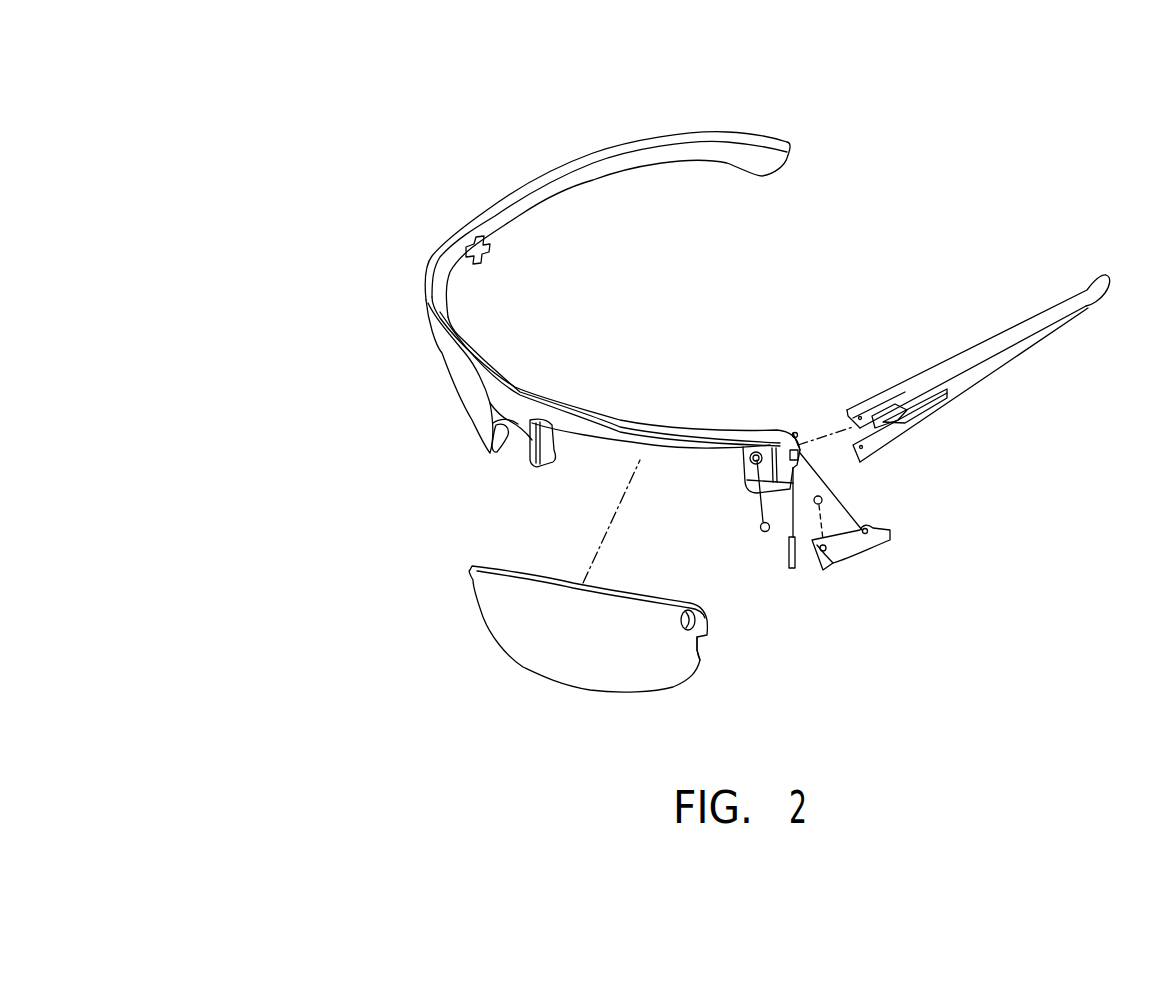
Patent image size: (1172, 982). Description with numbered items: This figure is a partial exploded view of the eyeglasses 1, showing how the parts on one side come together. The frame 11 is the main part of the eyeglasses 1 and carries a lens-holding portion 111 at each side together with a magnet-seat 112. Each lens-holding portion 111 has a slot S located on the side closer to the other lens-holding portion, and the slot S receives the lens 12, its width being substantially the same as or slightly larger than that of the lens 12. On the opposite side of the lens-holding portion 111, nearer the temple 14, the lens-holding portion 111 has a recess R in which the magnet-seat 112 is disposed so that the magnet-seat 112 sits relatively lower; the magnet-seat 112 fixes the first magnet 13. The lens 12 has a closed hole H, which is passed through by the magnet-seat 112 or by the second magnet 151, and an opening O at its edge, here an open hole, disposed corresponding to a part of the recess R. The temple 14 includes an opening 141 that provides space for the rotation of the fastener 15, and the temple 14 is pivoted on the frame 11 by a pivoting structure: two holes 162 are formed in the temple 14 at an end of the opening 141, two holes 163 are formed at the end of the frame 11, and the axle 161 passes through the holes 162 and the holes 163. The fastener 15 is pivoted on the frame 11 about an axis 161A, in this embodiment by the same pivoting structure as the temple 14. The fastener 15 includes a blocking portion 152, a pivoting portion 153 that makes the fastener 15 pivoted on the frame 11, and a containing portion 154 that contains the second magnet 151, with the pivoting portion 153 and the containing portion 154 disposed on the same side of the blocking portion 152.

The eyeglasses 1 is at (265, 108).
The frame 11 is at (612, 292).
The lens-holding portion 111 is at (458, 347).
The magnet-seat 112 is at (728, 443).
The lens 12 is at (543, 655).
The first magnet 13 is at (760, 527).
The temple 14 is at (1040, 333).
The opening 141 is at (900, 422).
The fastener 15 is at (887, 545).
The second magnet 151 is at (823, 498).
The blocking portion 152 is at (875, 553).
The pivoting portion 153 is at (873, 530).
The containing portion 154 is at (845, 573).
The axle 161 is at (797, 563).
The axis 161A is at (793, 497).
The hole 162 is at (882, 412).
The hole 163 is at (797, 433).
The recess R is at (748, 480).
The slot S is at (553, 457).
The hole H is at (700, 625).
The opening O is at (705, 650).